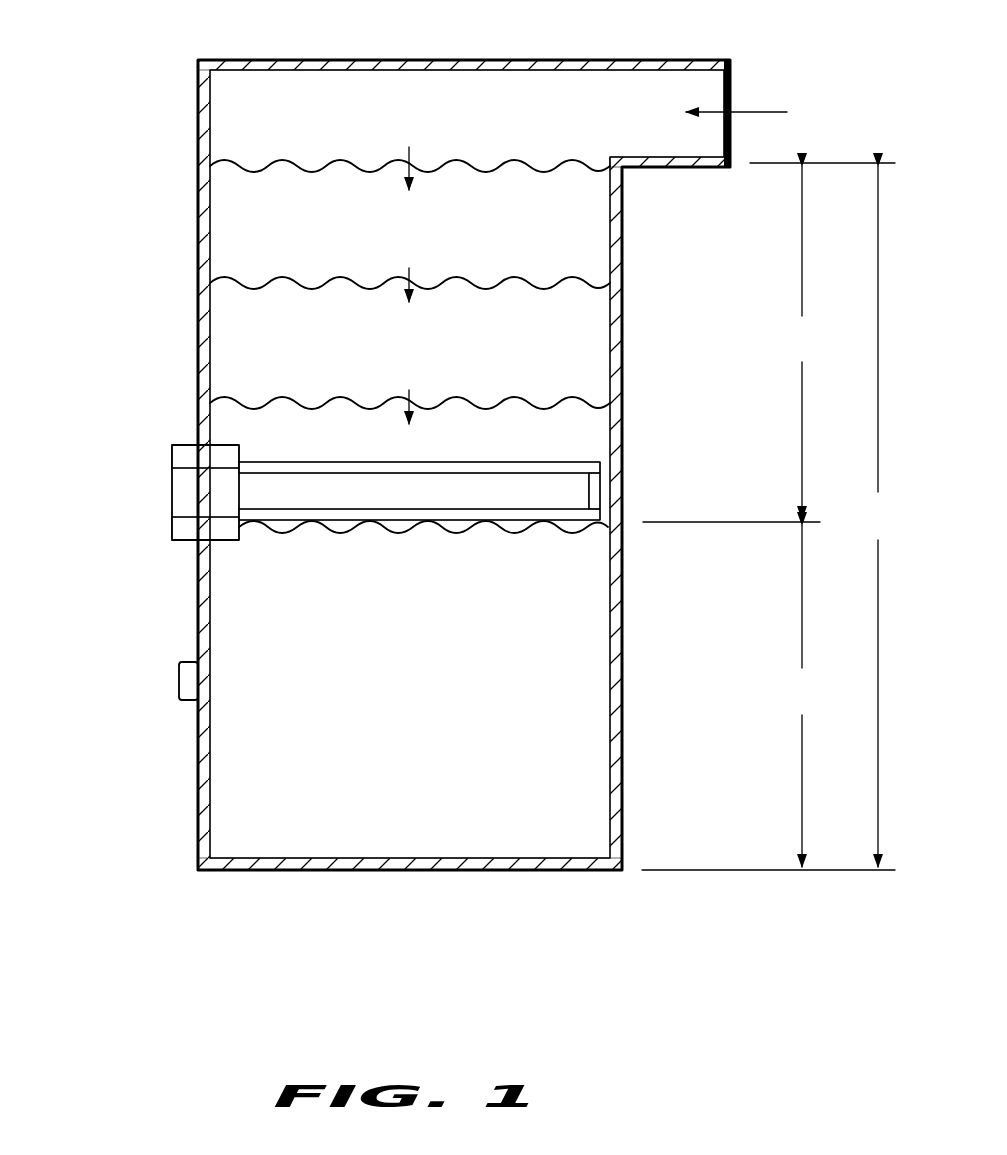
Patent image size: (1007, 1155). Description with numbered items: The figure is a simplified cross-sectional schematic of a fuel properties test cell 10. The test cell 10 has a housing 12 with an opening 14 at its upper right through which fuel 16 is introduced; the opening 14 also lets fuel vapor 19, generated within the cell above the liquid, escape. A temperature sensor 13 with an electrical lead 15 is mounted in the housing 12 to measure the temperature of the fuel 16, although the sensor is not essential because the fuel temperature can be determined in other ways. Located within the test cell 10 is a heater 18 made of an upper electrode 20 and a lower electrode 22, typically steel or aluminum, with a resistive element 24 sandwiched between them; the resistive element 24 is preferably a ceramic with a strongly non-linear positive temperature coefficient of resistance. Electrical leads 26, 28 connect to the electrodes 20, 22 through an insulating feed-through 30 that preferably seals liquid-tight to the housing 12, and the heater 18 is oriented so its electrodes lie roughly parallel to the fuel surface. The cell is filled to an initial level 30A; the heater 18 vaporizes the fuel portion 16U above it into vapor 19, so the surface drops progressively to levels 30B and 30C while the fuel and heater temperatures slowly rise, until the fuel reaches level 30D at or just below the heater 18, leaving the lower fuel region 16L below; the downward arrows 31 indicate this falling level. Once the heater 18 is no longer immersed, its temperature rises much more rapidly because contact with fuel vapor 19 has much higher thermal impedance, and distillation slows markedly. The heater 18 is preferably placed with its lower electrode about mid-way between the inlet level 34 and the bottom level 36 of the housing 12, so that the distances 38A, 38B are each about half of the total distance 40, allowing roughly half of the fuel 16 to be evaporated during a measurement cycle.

The fuel properties test cell 10 is at (435, 1000).
The housing 12 is at (199, 813).
The temperature sensor 13 is at (186, 662).
The opening 14 is at (668, 85).
The electrical lead 15 is at (179, 683).
The fuel 16 is at (762, 110).
The fuel portion above heater 16U is at (320, 238).
The lower fluid region 16L is at (430, 710).
The heater 18 is at (492, 438).
The fuel vapor 19 is at (308, 140).
The upper electrode 20 is at (348, 462).
The lower electrode 22 is at (350, 522).
The resistive element 24 is at (462, 500).
The electrical lead 26 is at (172, 468).
The electrical lead 28 is at (172, 517).
The insulating feed-through 30 is at (172, 490).
The initial level 30A is at (533, 166).
The level 30B is at (533, 283).
The level 30C is at (533, 403).
The level 30D is at (570, 528).
The flow direction 31 is at (409, 162).
The inlet level 34 is at (678, 167).
The bottom level 36 is at (400, 858).
The distance 38A is at (769, 342).
The distance 38B is at (768, 697).
The distance 40 is at (879, 516).